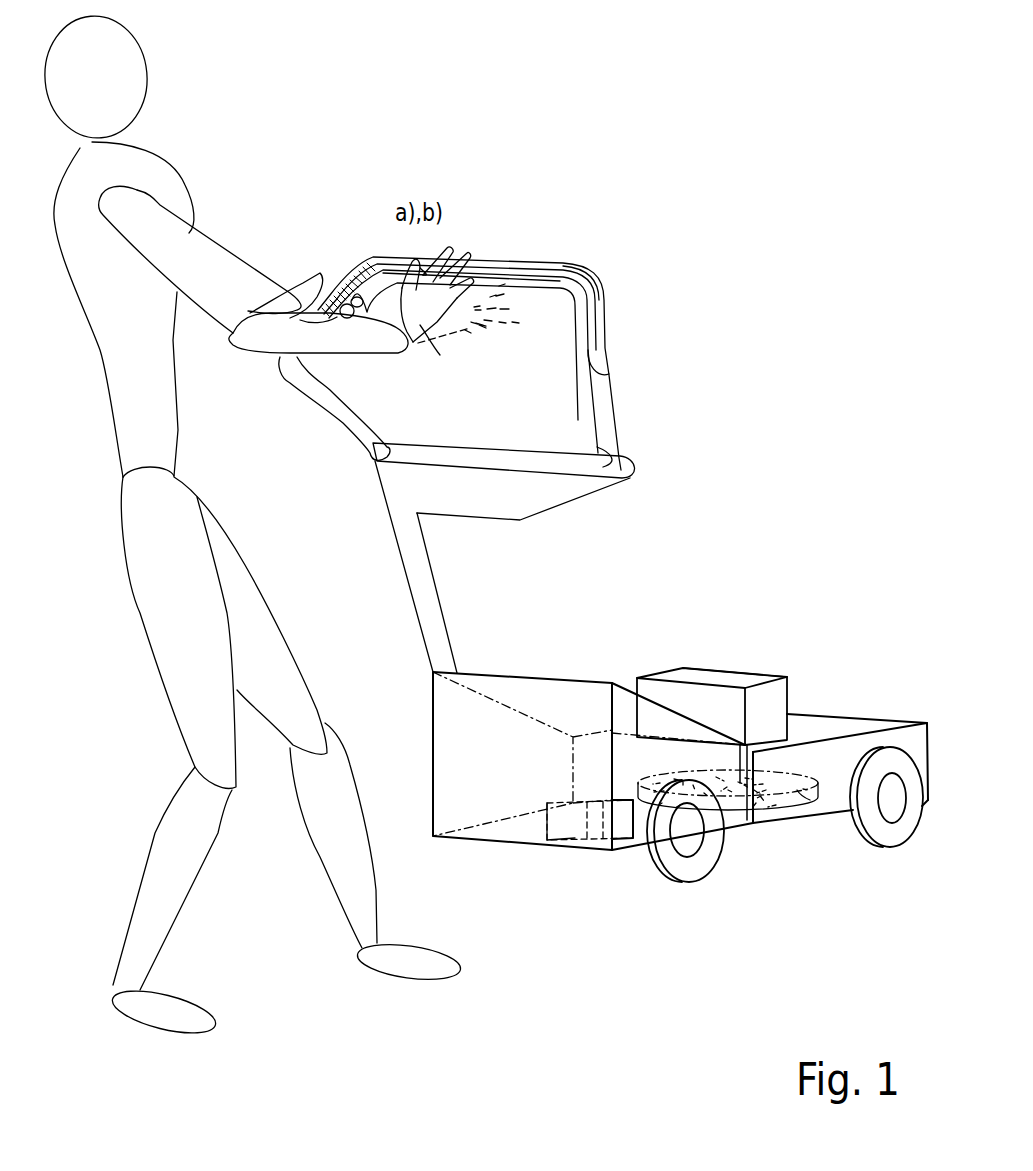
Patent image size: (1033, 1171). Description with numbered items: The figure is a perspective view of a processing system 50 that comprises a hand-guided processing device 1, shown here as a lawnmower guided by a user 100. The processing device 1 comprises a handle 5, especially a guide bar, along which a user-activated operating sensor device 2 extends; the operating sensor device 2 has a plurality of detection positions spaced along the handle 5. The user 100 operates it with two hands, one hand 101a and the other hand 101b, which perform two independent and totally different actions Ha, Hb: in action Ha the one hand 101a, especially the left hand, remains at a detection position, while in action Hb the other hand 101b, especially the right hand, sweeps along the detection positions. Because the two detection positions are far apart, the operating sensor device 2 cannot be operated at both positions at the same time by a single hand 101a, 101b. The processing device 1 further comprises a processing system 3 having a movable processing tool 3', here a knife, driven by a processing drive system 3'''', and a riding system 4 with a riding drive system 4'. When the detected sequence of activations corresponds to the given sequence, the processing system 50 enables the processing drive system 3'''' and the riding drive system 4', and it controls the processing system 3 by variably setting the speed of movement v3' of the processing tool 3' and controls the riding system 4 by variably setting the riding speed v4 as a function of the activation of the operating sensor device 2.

The user 100 is at (163, 180).
The one hand of the user 101a is at (302, 282).
The one hand of the user 101b is at (424, 343).
The action Ha is at (322, 280).
The action Hb is at (450, 318).
The hand-guided processing device 1 is at (340, 200).
The user-activated operating sensor device 2 is at (488, 265).
The handle 5 is at (530, 279).
The processing system 50 is at (845, 657).
The processing system 3 is at (712, 712).
The processing drive system 3'''' is at (726, 640).
The processing tool 3' is at (746, 844).
The speed of movement of the processing tool v3' is at (833, 833).
The riding system 4 is at (604, 860).
The riding drive system 4' is at (527, 851).
The riding speed v4 is at (692, 862).